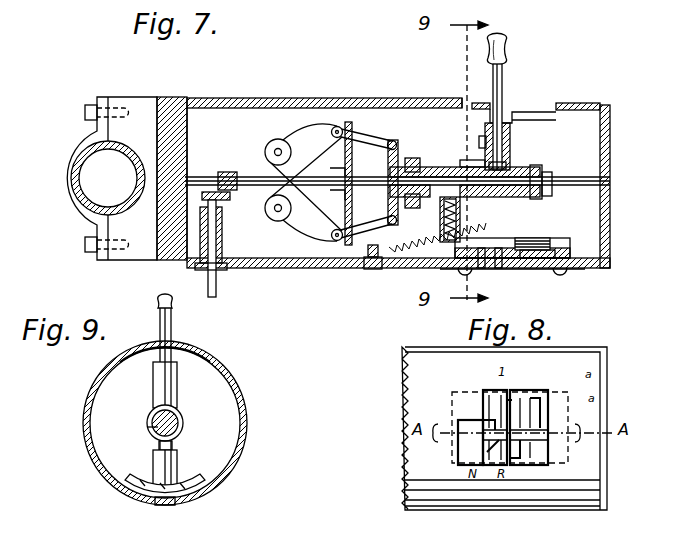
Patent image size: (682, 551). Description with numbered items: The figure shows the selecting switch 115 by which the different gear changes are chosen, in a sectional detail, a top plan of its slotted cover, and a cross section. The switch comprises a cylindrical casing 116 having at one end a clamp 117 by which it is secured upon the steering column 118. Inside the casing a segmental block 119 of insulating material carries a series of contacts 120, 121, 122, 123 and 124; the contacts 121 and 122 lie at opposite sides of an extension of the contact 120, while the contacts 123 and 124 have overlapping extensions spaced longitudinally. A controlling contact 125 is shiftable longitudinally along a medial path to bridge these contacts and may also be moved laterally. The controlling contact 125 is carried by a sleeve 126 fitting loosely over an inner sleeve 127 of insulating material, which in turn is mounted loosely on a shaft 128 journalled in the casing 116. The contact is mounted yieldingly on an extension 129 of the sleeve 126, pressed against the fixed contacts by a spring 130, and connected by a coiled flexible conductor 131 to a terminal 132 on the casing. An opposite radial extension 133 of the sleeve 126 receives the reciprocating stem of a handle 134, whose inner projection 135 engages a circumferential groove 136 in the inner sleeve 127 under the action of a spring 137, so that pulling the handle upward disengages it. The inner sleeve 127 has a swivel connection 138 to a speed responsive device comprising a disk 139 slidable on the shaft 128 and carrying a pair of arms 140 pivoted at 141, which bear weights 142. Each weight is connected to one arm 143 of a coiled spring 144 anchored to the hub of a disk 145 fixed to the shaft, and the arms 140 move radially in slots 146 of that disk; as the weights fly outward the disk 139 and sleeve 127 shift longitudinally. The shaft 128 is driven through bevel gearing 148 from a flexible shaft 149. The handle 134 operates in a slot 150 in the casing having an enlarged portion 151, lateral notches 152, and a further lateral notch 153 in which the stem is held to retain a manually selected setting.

In FIG. 7, the selecting switch 115 is at (266, 99).
In FIG. 7, the casing 116 is at (338, 101).
In FIG. 8, the casing 116 is at (430, 352).
In FIG. 9, the casing 116 is at (238, 388).
In FIG. 7, the clamp 117 is at (78, 144).
In FIG. 7, the steering column 118 is at (84, 206).
In FIG. 7, the segmental block 119 is at (474, 272).
In FIG. 8, the segmental block 119 is at (455, 393).
In FIG. 9, the segmental block 119 is at (178, 504).
In FIG. 7, the contact 120 is at (483, 270).
In FIG. 8, the contact 120 is at (486, 392).
In FIG. 7, the contact 121 is at (500, 270).
In FIG. 8, the contact 121 is at (514, 392).
In FIG. 8, the contact 122 is at (495, 470).
In FIG. 7, the contact 123 is at (528, 266).
In FIG. 8, the contact 123 is at (548, 405).
In FIG. 7, the contact 124 is at (548, 244).
In FIG. 8, the contact 124 is at (540, 398).
In FIG. 7, the controlling contact 125 is at (505, 246).
In FIG. 9, the controlling contact 125 is at (153, 464).
In FIG. 7, the sleeve 126 is at (535, 166).
In FIG. 9, the sleeve 126 is at (150, 416).
In FIG. 7, the inner sleeve 127 is at (546, 172).
In FIG. 9, the inner sleeve 127 is at (148, 428).
In FIG. 7, the shaft 128 is at (552, 192).
In FIG. 9, the shaft 128 is at (184, 423).
In FIG. 7, the extension 129 is at (448, 207).
In FIG. 9, the extension 129 is at (174, 444).
In FIG. 7, the spring 130 is at (462, 214).
In FIG. 7, the flexible conductor 131 is at (392, 246).
In FIG. 7, the terminal 132 is at (368, 270).
In FIG. 7, the extension 133 is at (511, 126).
In FIG. 9, the extension 133 is at (153, 384).
In FIG. 7, the handle 134 is at (509, 56).
In FIG. 9, the handle 134 is at (177, 304).
In FIG. 7, the projection 135 is at (507, 164).
In FIG. 7, the groove 136 is at (466, 165).
In FIG. 7, the spring 137 is at (480, 140).
In FIG. 7, the swivel connection 138 is at (415, 158).
In FIG. 7, the disk 139 is at (388, 204).
In FIG. 7, the arms 140 is at (368, 136).
In FIG. 7, the pivot 141 is at (394, 141).
In FIG. 7, the weights 142 is at (265, 152).
In FIG. 7, the arm 143 is at (306, 182).
In FIG. 7, the coiled spring 144 is at (333, 129).
In FIG. 7, the disk 145 is at (352, 148).
In FIG. 7, the radial slots 146 is at (344, 200).
In FIG. 7, the bevel gearing 148 is at (228, 172).
In FIG. 7, the shaft 149 is at (222, 287).
In FIG. 7, the slot 150 is at (477, 102).
In FIG. 8, the slot 150 is at (460, 420).
In FIG. 9, the slot 150 is at (160, 342).
In FIG. 7, the enlarged portion 151 is at (562, 103).
In FIG. 8, the enlarged portion 151 is at (540, 390).
In FIG. 7, the lateral notches 152 is at (508, 110).
In FIG. 8, the lateral notches 152 is at (498, 390).
In FIG. 8, the lateral notch 153 is at (456, 464).
In FIG. 9, the lateral notch 153 is at (188, 354).